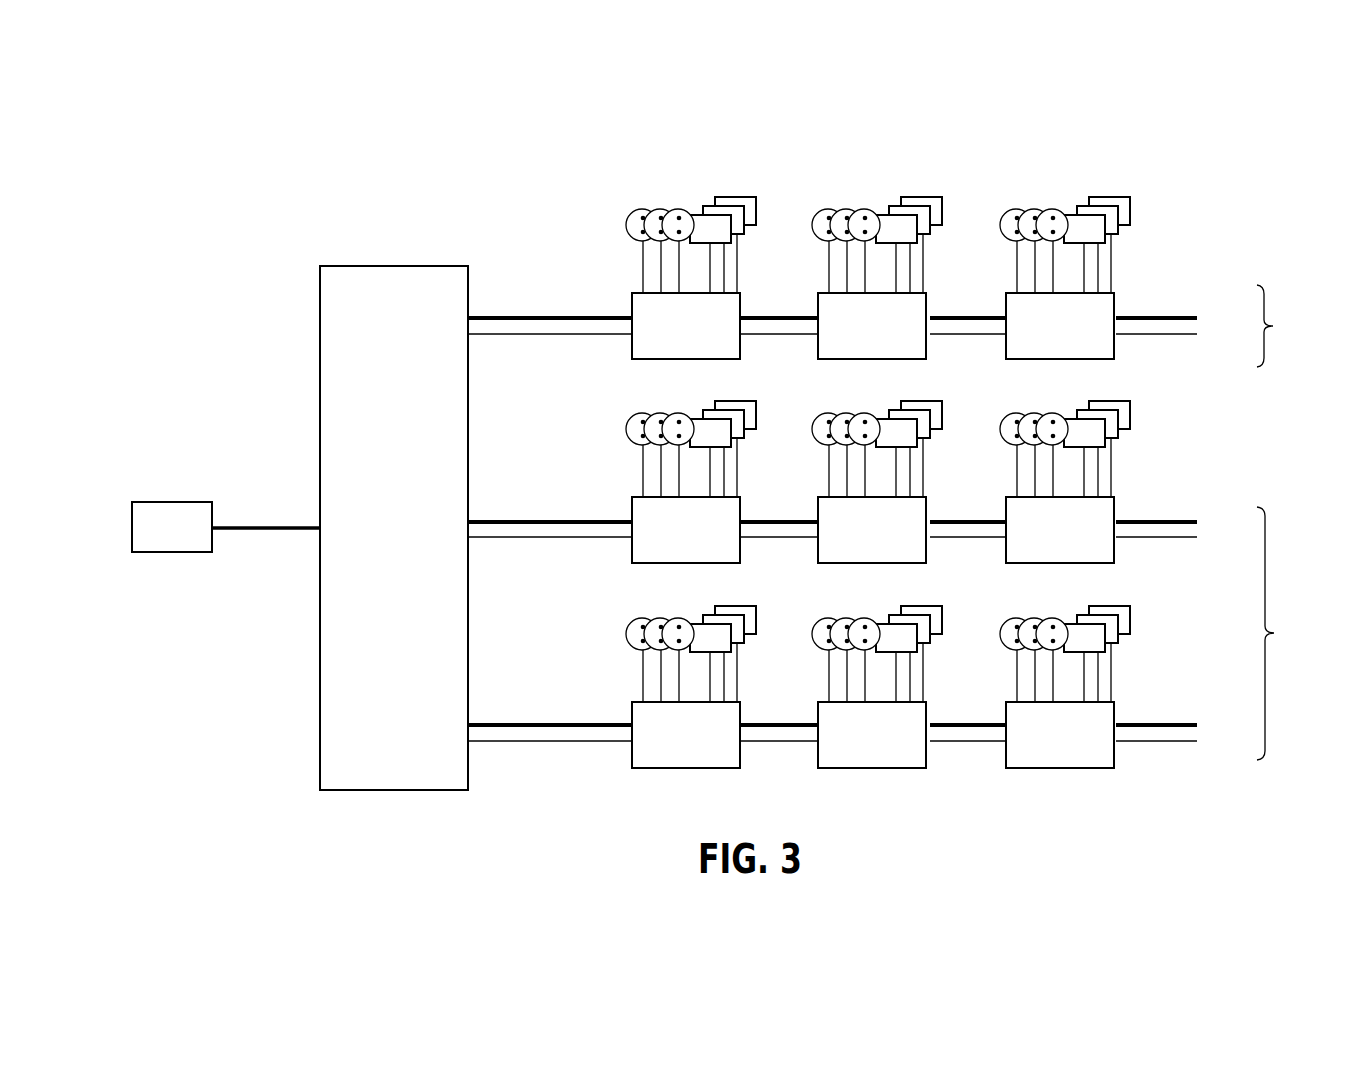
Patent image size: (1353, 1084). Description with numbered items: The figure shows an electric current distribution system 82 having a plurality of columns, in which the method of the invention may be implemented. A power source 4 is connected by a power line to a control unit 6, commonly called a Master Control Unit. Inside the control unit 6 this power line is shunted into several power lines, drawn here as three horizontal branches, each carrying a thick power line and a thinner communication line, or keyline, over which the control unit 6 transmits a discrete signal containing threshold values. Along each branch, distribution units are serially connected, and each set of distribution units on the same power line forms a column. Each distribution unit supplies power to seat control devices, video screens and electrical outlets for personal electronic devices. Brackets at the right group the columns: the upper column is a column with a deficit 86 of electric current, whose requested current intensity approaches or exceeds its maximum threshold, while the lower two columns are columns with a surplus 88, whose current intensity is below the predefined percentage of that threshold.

The power source 4 is at (164, 540).
The control unit 6 is at (386, 540).
The distribution system 82 is at (255, 812).
The columns with a deficit 86 is at (1284, 326).
The columns with a surplus 88 is at (1284, 633).